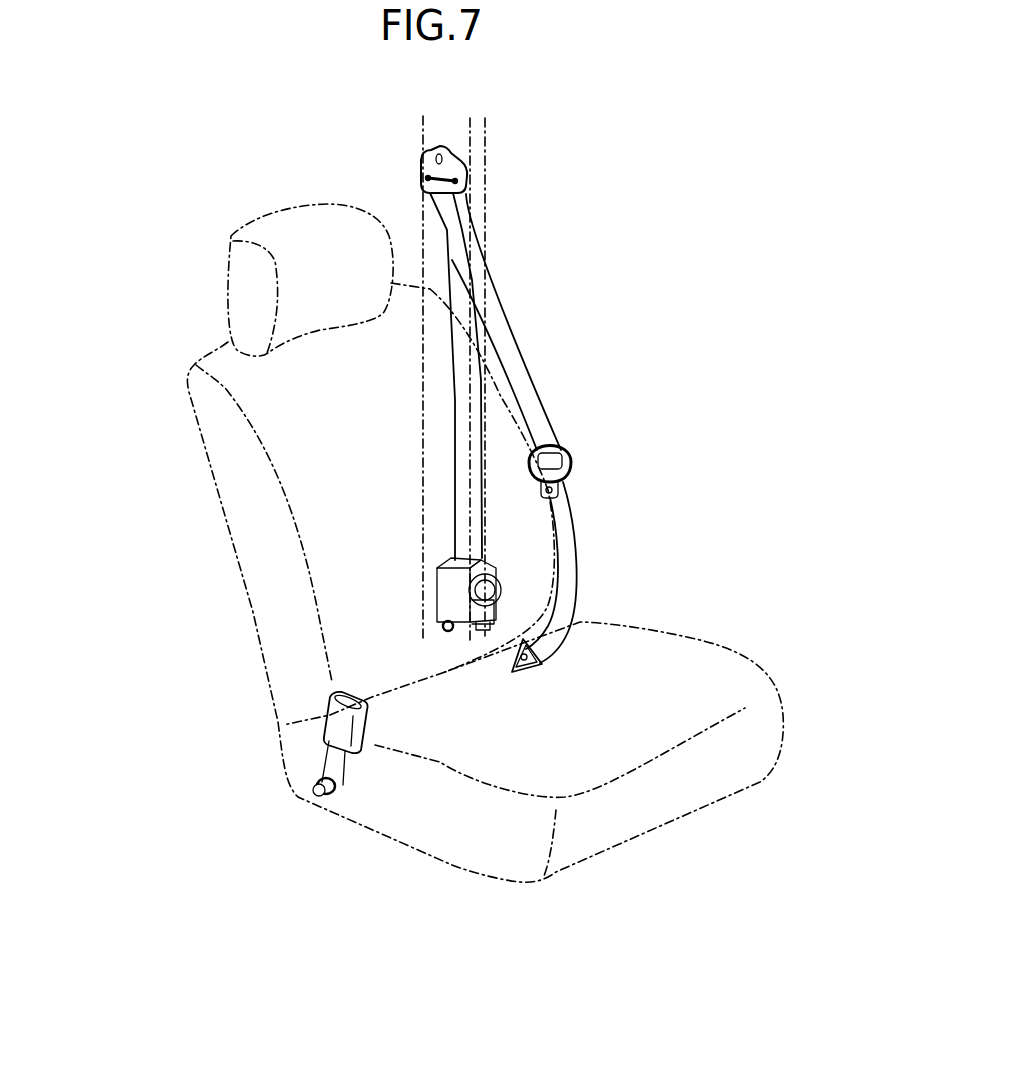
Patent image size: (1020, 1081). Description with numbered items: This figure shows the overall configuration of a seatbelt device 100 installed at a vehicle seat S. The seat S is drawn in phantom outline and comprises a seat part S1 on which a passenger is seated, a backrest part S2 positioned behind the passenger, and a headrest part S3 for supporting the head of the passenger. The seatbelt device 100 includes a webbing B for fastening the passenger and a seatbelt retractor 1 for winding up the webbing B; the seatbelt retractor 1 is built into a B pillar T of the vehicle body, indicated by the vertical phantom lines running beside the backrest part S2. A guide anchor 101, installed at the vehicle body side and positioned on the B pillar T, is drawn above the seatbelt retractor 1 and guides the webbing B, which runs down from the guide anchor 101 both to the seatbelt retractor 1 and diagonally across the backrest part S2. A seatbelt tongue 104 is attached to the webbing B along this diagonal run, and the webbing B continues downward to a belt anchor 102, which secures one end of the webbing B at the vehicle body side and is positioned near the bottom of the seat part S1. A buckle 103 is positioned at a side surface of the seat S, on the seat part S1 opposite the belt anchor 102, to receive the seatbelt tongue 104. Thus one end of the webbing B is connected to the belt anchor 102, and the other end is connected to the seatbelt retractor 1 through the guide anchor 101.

The seatbelt retractor 1 is at (438, 598).
The seatbelt device 100 is at (577, 387).
The guide anchor 101 is at (426, 157).
The belt anchor 102 is at (532, 674).
The buckle 103 is at (330, 716).
The seatbelt tongue 104 is at (572, 466).
The webbing B is at (510, 323).
The B pillar T is at (480, 140).
The seat S is at (160, 322).
The seat part S1 is at (698, 686).
The backrest part S2 is at (341, 416).
The headrest part S3 is at (341, 276).